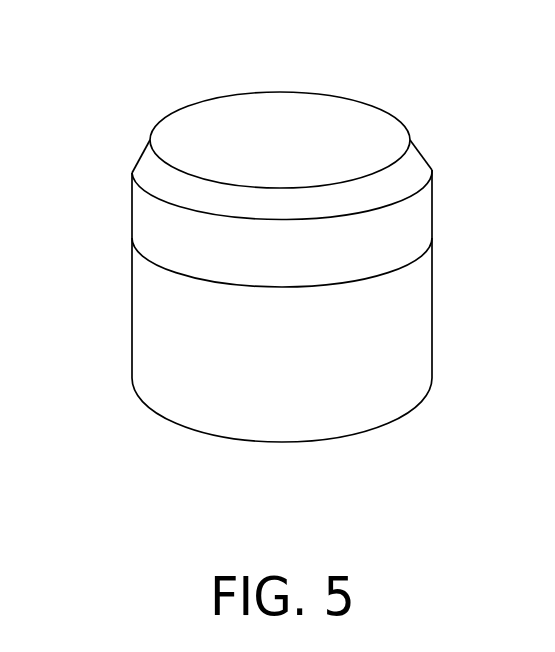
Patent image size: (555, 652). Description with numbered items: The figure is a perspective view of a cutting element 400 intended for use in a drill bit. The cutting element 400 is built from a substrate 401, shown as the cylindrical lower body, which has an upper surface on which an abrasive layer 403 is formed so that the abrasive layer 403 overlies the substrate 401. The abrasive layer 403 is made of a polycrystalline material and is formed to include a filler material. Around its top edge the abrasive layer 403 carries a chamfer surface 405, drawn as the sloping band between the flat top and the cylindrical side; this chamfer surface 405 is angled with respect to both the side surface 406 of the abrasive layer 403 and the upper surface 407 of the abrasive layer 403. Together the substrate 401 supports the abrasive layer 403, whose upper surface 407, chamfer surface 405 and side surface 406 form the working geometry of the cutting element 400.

The cutting element 400 is at (110, 76).
The substrate 401 is at (173, 358).
The abrasive layer 403 is at (150, 228).
The chamfer surface 405 is at (418, 165).
The side surface 406 is at (432, 218).
The upper surface 407 is at (385, 132).